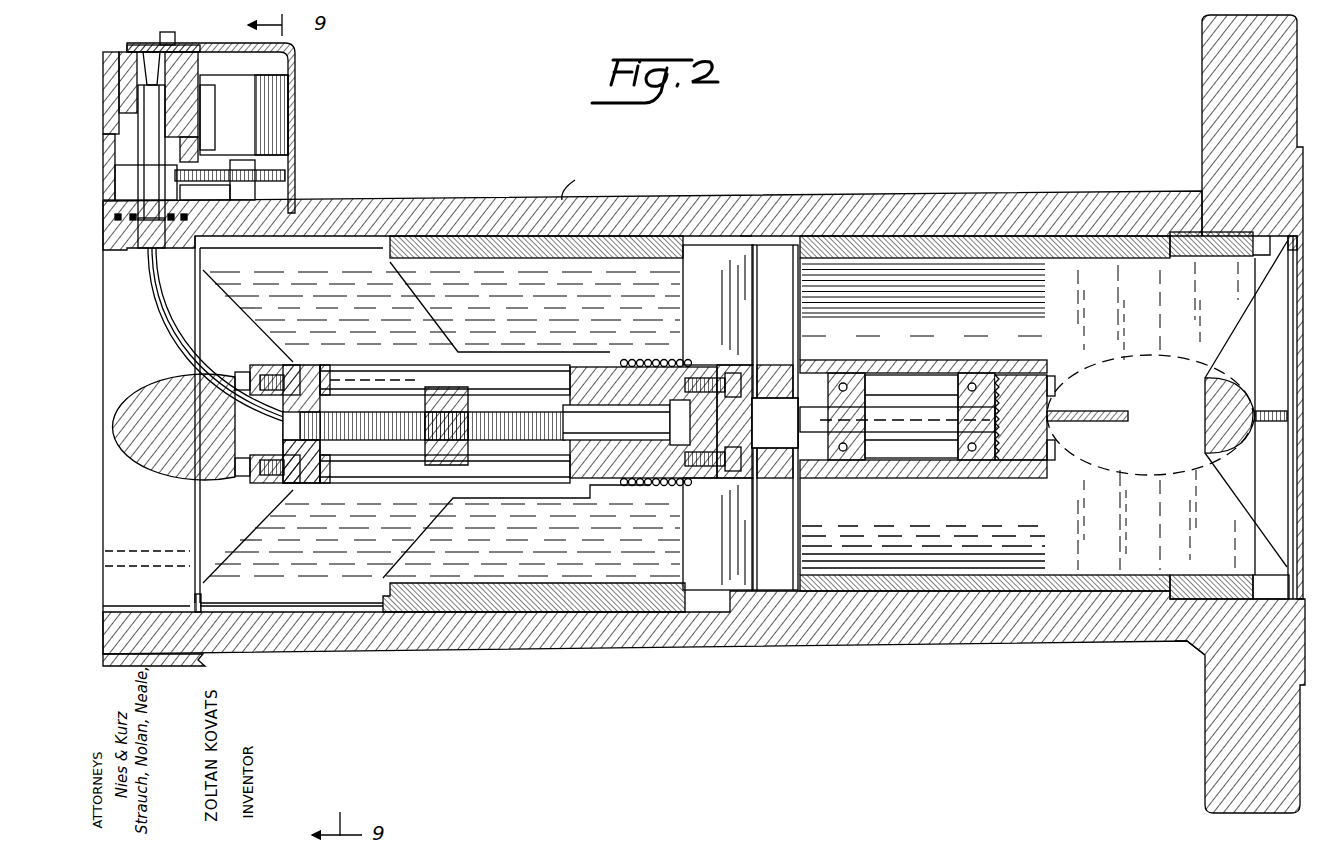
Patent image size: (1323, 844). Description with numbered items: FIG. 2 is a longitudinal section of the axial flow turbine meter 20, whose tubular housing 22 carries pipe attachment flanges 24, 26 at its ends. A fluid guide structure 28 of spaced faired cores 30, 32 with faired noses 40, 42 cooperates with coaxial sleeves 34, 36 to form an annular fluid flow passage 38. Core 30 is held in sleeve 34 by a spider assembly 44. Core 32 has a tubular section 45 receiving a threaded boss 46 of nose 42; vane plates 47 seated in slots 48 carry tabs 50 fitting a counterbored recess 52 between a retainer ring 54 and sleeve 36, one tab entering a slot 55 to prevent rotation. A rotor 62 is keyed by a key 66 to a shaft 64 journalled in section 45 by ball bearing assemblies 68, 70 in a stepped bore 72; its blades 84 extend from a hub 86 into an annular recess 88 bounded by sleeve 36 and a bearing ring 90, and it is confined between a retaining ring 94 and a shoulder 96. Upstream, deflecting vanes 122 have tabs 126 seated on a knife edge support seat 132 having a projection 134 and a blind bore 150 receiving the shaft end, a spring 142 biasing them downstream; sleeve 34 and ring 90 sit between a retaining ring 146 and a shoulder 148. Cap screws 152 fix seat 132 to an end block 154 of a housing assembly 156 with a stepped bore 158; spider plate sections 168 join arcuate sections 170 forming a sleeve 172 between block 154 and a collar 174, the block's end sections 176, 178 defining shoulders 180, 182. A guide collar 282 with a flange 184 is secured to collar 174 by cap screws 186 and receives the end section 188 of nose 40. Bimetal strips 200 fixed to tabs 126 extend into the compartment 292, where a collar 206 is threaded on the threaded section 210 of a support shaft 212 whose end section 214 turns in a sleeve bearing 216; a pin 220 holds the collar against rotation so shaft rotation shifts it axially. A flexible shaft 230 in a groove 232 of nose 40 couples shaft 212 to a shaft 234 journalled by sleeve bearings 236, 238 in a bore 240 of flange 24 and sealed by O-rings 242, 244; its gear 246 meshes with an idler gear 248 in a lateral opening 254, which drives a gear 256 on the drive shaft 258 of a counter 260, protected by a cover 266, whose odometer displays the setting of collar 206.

The axial flow turbine meter 20 is at (1085, 645).
The housing 22 is at (983, 193).
The pipe attachment flange 24 is at (110, 595).
The pipe attachment flange 26 is at (1200, 63).
The fluid guide structure 28 is at (1020, 478).
The faired core 30 is at (252, 487).
The faired core 32 is at (935, 482).
The sleeve 34 is at (580, 183).
The sleeve 36 is at (880, 236).
The annular fluid flow passage 38 is at (468, 303).
The faired nose 40 is at (130, 448).
The faired nose 42 is at (1240, 392).
The spider assembly 44 is at (466, 352).
The tubular section 45 is at (900, 478).
The threaded boss 46 is at (1000, 462).
The vane plates 47 is at (1250, 306).
The slots 48 is at (1050, 376).
The tabs 50 is at (1265, 248).
The counterbored recess 52 is at (1272, 230).
The retainer ring 54 is at (1290, 252).
The slot 55 is at (1242, 612).
The turbine metering rotor 62 is at (802, 530).
The shaft 64 is at (905, 406).
The key 66 is at (805, 366).
The ball bearing assembly 68 is at (856, 373).
The ball bearing assembly 70 is at (972, 376).
The stepped bore 72 is at (904, 376).
The blades 84 is at (786, 297).
The rotor hub 86 is at (798, 372).
The recess 88 is at (775, 250).
The bearing ring 90 is at (742, 236).
The retaining ring 94 is at (770, 450).
The annular shoulder 96 is at (805, 440).
The fluid flow deflecting vanes 122 is at (740, 314).
The tabs 126 is at (666, 470).
The knife edge support seat 132 is at (730, 480).
The projection 134 is at (706, 470).
The helically coiled spring 142 is at (650, 365).
The retaining ring 146 is at (195, 600).
The annular shoulder 148 is at (690, 250).
The blind bore 150 is at (730, 376).
The cap screws 152 is at (708, 378).
The end block 154 is at (626, 486).
The housing assembly 156 is at (560, 498).
The stepped bore 158 is at (672, 366).
The plate section 168 is at (395, 260).
The arcuate section 170 is at (522, 484).
The sleeve 172 is at (500, 365).
The collar 174 is at (280, 370).
The end section 176 is at (572, 368).
The end section 178 is at (640, 487).
The annular shoulder 180 is at (590, 486).
The annular shoulder 182 is at (624, 360).
The radial flange 184 is at (252, 368).
The cap screws 186 is at (240, 378).
The end section 188 is at (312, 352).
The bimetal strips 200 is at (516, 394).
The collar 206 is at (440, 388).
The threaded section 210 is at (340, 408).
The support shaft 212 is at (530, 410).
The end section 214 is at (596, 425).
The flanged sleeve bearing 216 is at (602, 400).
The pin 220 is at (325, 368).
The flexible shaft 230 is at (160, 330).
The groove 232 is at (196, 373).
The shaft 234 is at (152, 80).
The sleeve bearing 236 is at (186, 200).
The sleeve bearing 238 is at (192, 55).
The bore 240 is at (120, 60).
The O-ring 242 is at (148, 232).
The O-ring 244 is at (150, 262).
The gear 246 is at (113, 172).
The idler gear 248 is at (192, 172).
The lateral opening 254 is at (118, 215).
The gear 256 is at (288, 174).
The drive shaft 258 is at (258, 192).
The direct drive counter 260 is at (286, 82).
The cover 266 is at (296, 50).
The guide collar 282 is at (322, 475).
The compartment 292 is at (392, 470).